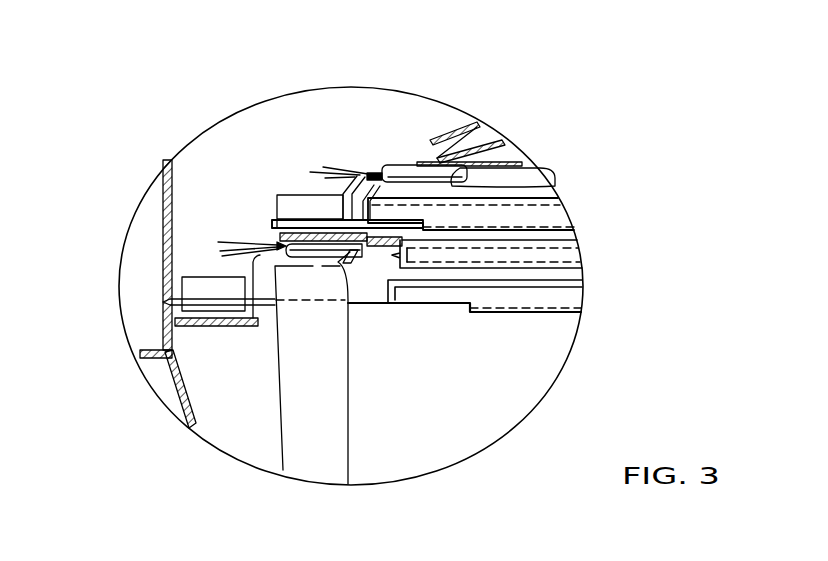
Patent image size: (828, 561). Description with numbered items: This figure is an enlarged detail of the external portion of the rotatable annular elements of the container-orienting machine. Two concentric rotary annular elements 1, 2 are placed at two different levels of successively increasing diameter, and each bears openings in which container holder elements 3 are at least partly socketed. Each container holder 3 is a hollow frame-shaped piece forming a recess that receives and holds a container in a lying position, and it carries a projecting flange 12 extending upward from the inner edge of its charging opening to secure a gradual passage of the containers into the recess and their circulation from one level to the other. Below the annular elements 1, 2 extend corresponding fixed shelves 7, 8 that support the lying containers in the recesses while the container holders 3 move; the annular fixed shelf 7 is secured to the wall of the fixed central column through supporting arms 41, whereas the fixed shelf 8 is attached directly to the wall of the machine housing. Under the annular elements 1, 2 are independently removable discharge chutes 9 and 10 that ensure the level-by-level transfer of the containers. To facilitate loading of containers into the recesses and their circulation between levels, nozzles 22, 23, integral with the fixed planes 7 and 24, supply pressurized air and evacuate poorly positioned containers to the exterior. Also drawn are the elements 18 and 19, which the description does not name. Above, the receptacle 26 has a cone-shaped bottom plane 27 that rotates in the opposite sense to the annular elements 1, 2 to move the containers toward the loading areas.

The rotary annular element 1 is at (273, 222).
The rotary annular element 2 is at (173, 303).
The container holder element 3 is at (203, 281).
The fixed shelf 7 is at (350, 262).
The fixed shelf 8 is at (220, 328).
The discharge chute 9 is at (348, 392).
The discharge chute 10 is at (243, 420).
The projecting flange 12 is at (345, 178).
The outer tube 18 is at (550, 217).
The lower tube 19 is at (550, 302).
The nozzle 22 is at (393, 163).
The nozzle 23 is at (302, 262).
The fixed plane 24 is at (510, 160).
The receptacle 26 is at (165, 225).
The bottom plane 27 is at (444, 135).
The supporting arm 41 is at (565, 260).